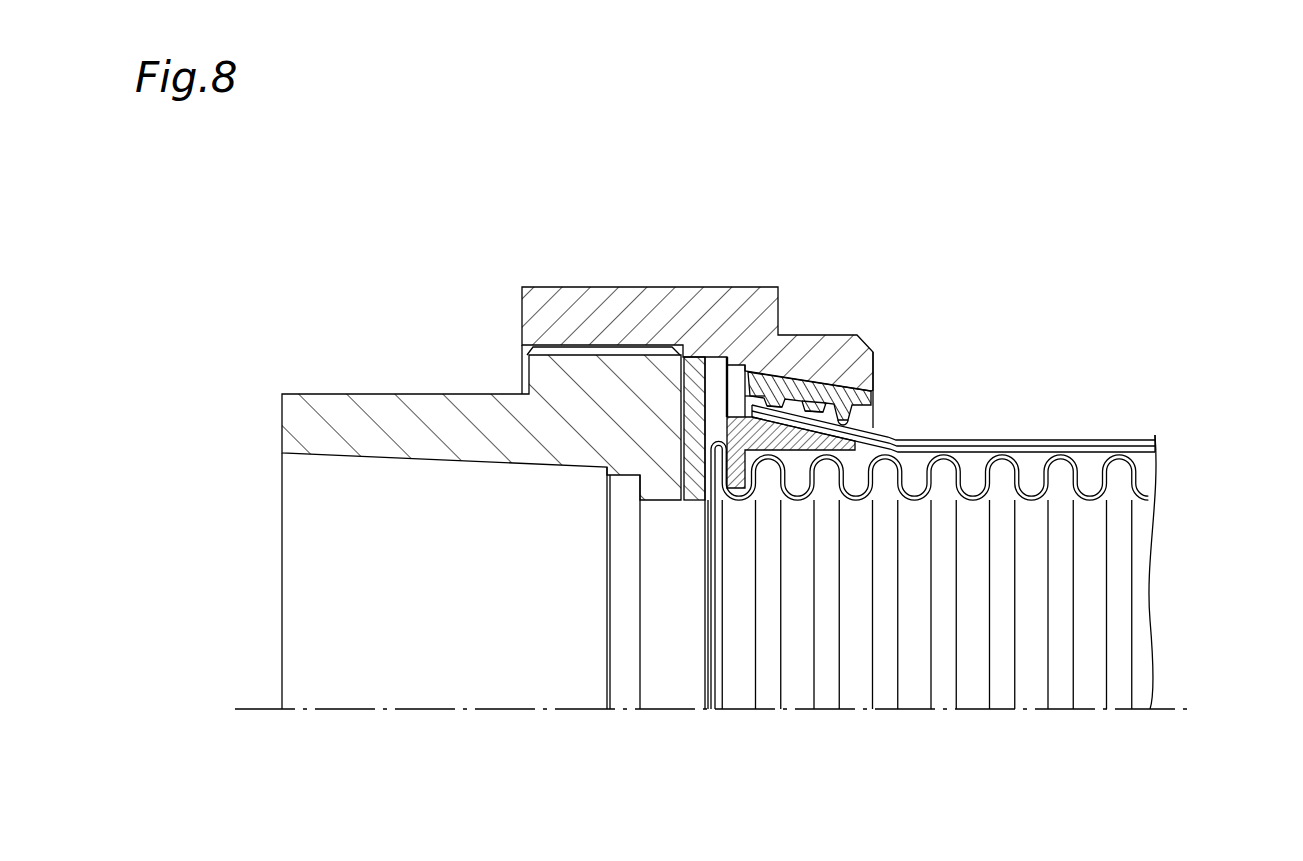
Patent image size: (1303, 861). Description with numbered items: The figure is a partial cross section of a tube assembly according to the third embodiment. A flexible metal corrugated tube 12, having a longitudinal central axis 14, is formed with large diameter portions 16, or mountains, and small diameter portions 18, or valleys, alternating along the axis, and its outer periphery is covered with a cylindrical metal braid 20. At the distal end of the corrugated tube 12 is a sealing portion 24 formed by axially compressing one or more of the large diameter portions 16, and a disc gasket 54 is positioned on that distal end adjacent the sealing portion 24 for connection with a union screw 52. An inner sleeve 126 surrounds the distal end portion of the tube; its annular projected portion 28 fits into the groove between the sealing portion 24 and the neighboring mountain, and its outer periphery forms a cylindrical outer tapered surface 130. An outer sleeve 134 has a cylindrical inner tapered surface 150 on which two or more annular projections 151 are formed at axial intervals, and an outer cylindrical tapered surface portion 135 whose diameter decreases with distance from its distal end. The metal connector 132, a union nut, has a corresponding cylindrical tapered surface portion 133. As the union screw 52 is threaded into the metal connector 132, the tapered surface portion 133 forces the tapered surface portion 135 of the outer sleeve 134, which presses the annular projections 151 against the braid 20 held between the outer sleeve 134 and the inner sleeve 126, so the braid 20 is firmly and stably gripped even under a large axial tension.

The corrugated tube 12 is at (1008, 700).
The longitudinal central axis 14 is at (505, 712).
The large diameter portions 16 is at (1118, 468).
The small diameter portions 18 is at (1090, 503).
The braid 20 is at (1127, 440).
The sealing portion 24 is at (707, 490).
The annular projected portion 28 is at (737, 498).
The union screw 52 is at (343, 390).
The disc gasket 54 is at (695, 490).
The inner sleeve 126 is at (798, 455).
The cylindrical outer tapered surface 130 is at (742, 380).
The metal connector 132 is at (576, 287).
The cylindrical tapered surface portion 133 is at (798, 385).
The outer sleeve 134 is at (875, 407).
The outer cylindrical tapered surface portion 135 is at (828, 390).
The cylindrical inner tapered surface 150 is at (758, 398).
The annular projections 151 is at (848, 408).